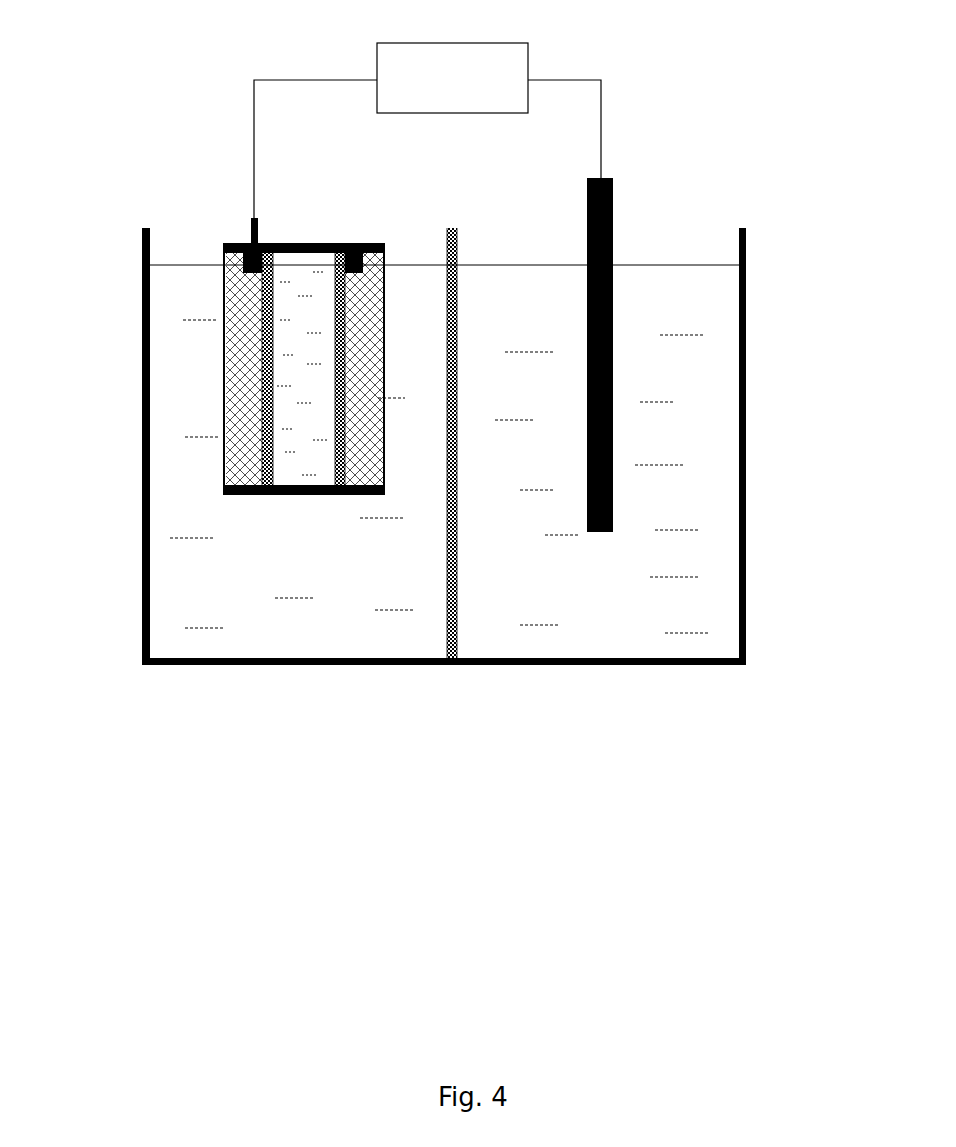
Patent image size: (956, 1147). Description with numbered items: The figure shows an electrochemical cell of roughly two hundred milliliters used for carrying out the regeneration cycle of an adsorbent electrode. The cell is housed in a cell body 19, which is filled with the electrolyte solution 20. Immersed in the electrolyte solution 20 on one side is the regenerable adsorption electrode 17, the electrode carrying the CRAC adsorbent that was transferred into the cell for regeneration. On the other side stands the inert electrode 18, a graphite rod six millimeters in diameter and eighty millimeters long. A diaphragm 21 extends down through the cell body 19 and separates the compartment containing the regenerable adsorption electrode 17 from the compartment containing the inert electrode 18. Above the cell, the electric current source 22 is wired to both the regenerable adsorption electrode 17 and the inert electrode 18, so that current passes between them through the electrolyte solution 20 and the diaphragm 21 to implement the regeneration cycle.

The regenerable adsorption electrode 17 is at (243, 400).
The inert electrode 18 is at (603, 213).
The cell body 19 is at (747, 593).
The electrolyte solution 20 is at (709, 438).
The diaphragm 21 is at (457, 663).
The electric current source 22 is at (427, 113).